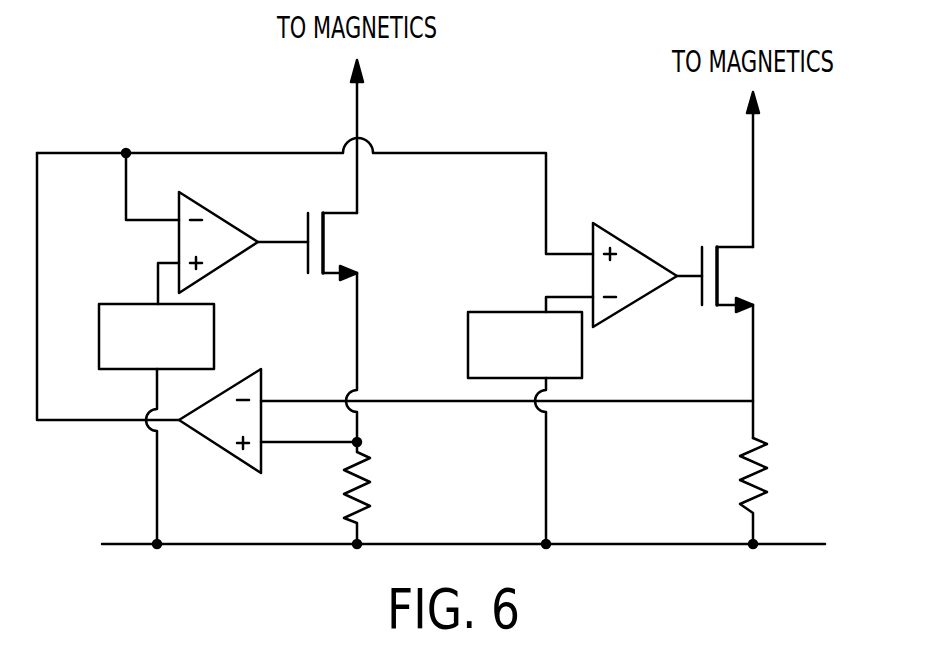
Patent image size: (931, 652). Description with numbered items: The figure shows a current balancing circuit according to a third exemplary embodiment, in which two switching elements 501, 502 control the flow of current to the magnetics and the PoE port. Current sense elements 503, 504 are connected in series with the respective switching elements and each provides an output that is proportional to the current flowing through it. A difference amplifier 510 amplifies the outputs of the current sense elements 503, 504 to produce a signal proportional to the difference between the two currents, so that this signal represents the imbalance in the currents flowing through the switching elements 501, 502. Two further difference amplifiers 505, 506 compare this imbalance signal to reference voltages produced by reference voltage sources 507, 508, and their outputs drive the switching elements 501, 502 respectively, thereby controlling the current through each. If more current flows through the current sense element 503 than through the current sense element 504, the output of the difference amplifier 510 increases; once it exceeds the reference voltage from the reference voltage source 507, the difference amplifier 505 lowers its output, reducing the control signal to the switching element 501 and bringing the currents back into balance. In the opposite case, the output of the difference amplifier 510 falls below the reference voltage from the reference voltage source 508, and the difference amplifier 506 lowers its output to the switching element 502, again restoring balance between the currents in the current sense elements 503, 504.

The switching element 501 is at (363, 242).
The switching element 502 is at (758, 277).
The current sense element 503 is at (390, 481).
The current sense element 504 is at (788, 471).
The difference amplifier 505 is at (241, 230).
The difference amplifier 506 is at (655, 262).
The reference voltage source 507 is at (116, 304).
The reference voltage source 508 is at (510, 312).
The difference amplifier 510 is at (212, 442).